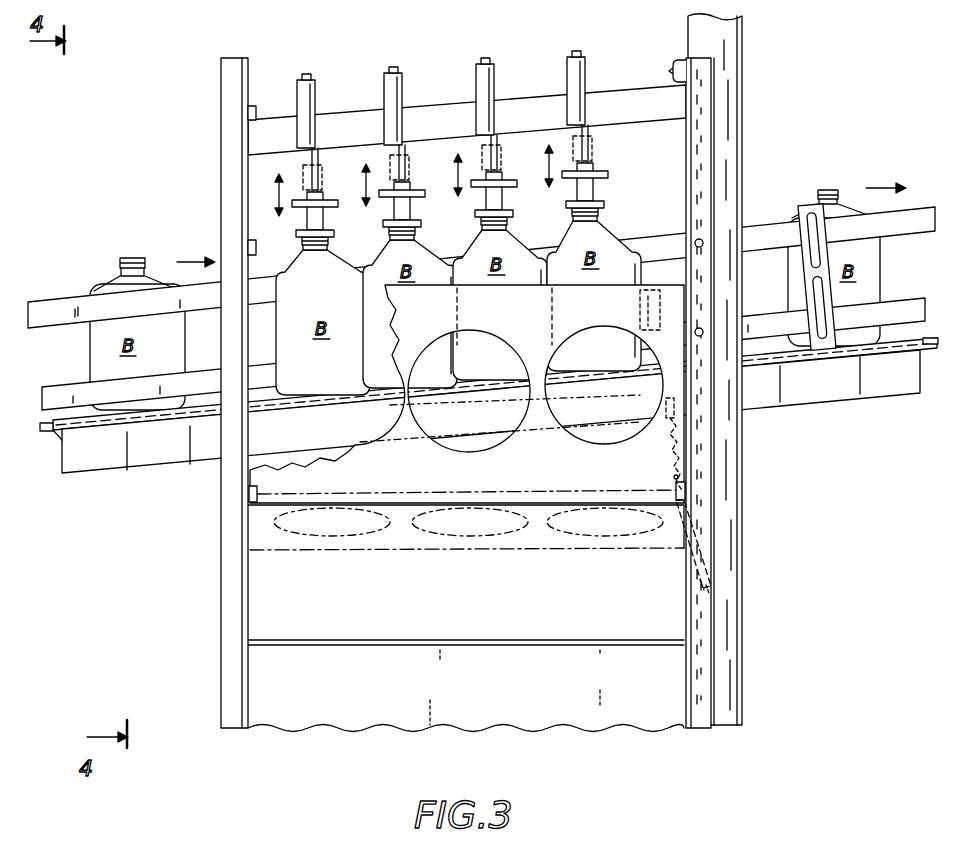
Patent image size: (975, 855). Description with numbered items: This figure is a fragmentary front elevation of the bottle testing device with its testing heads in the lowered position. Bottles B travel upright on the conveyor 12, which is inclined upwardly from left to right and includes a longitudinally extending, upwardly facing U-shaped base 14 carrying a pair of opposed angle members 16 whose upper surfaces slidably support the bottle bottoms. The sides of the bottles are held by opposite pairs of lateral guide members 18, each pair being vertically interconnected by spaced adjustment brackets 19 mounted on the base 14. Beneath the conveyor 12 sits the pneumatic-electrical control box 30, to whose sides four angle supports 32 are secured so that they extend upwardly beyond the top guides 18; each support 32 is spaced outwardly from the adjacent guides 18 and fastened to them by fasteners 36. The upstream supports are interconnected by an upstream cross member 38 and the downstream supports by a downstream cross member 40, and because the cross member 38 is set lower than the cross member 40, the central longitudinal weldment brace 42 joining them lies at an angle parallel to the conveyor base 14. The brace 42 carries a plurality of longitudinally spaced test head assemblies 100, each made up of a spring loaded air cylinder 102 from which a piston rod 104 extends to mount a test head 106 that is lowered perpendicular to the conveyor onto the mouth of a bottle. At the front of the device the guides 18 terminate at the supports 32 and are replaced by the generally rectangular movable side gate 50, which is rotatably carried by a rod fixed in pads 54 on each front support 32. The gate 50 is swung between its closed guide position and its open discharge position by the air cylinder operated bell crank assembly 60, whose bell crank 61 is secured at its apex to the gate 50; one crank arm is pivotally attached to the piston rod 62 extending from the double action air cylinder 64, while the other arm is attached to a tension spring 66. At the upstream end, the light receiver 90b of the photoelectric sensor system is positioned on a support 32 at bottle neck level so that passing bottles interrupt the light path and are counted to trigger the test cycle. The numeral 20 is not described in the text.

The conveyor 12 is at (810, 412).
The base 14 is at (90, 466).
The angle members 16 is at (62, 455).
The lateral guide members 18 is at (60, 320).
The adjustment brackets 19 is at (806, 205).
The stop 20 is at (44, 430).
The pneumatic-electrical control box 30 is at (502, 694).
The angle supports 32 is at (226, 154).
The fasteners 36 is at (704, 247).
The upstream cross member 38 is at (247, 113).
The downstream cross member 40 is at (676, 64).
The central longitudinal weldment brace 42 is at (436, 112).
The movable side gate 50 is at (520, 323).
The pads 54 is at (248, 494).
The bell crank assembly 60 is at (710, 532).
The bell crank 61 is at (672, 477).
The piston rod 62 is at (694, 471).
The air cylinder 64 is at (708, 566).
The tension spring 66 is at (692, 444).
The receiver 90b is at (247, 247).
The test head assemblies 100 is at (441, 130).
The spring loaded air cylinder 102 is at (385, 88).
The piston rod 104 is at (390, 158).
The test head 106 is at (395, 203).